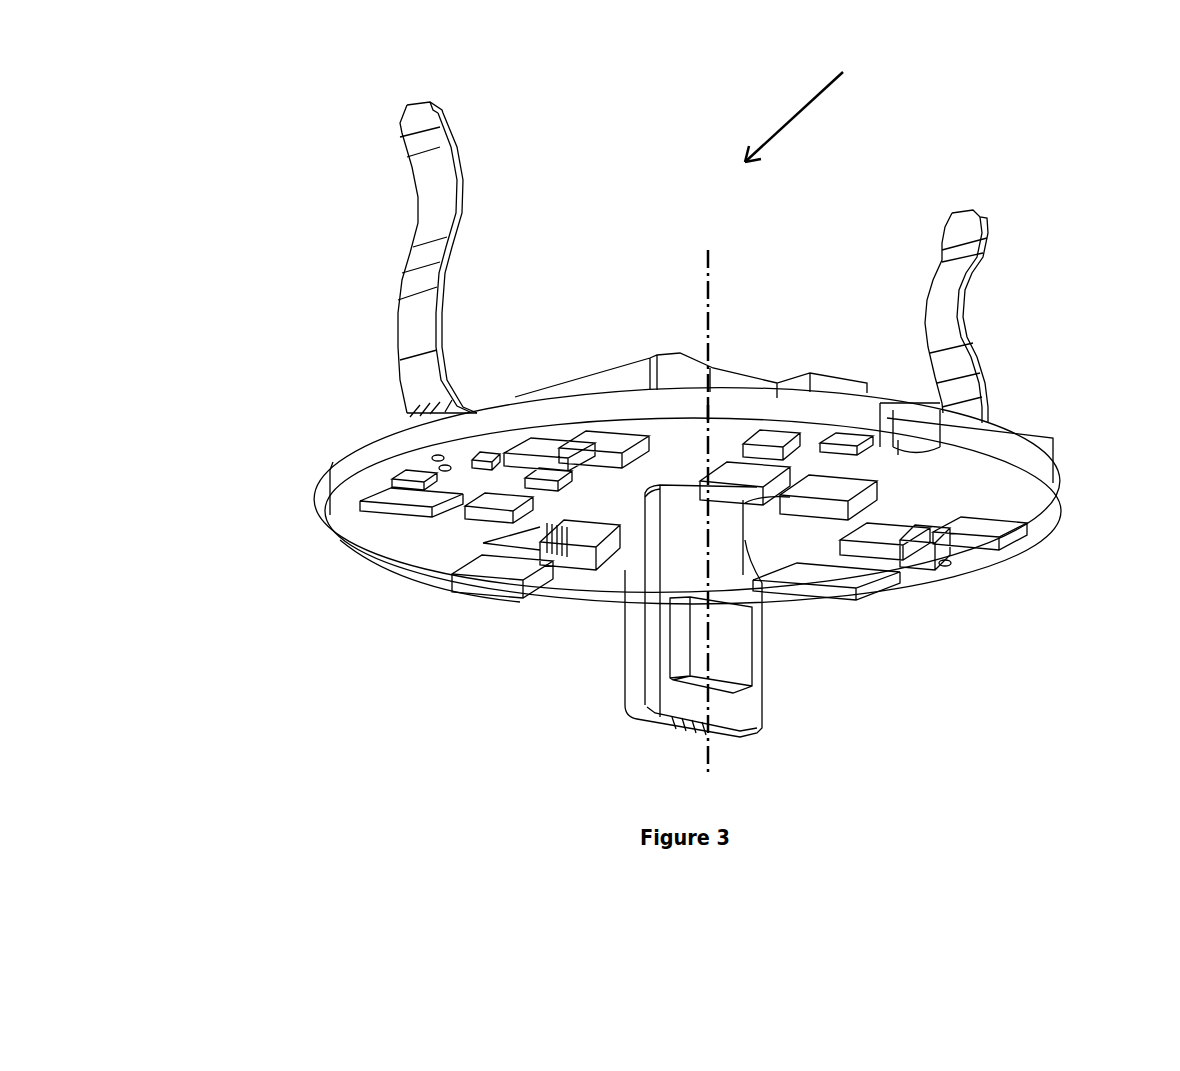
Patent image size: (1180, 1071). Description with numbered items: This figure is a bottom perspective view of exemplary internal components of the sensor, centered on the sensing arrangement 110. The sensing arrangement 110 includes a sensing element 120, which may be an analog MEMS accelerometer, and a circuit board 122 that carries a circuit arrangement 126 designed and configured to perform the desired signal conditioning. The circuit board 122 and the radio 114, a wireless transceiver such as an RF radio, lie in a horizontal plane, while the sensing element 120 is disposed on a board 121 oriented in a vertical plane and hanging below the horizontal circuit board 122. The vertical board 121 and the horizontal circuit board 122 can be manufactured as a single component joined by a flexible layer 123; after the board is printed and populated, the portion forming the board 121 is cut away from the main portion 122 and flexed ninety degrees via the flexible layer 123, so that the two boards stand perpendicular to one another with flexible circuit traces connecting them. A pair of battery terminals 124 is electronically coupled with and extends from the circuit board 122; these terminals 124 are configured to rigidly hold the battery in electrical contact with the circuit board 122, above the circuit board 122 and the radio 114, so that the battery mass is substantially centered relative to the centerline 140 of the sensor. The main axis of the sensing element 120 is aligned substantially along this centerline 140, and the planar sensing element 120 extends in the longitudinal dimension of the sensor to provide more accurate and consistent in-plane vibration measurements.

The sensing arrangement 110 is at (821, 111).
The radio 114 is at (627, 378).
The sensing element 120 is at (727, 645).
The board 121 is at (638, 685).
The circuit board 122 is at (352, 460).
The flexible layer 123 is at (727, 522).
The battery terminals 124 is at (437, 200).
The circuit arrangement 126 is at (383, 562).
The centerline 140 is at (690, 770).